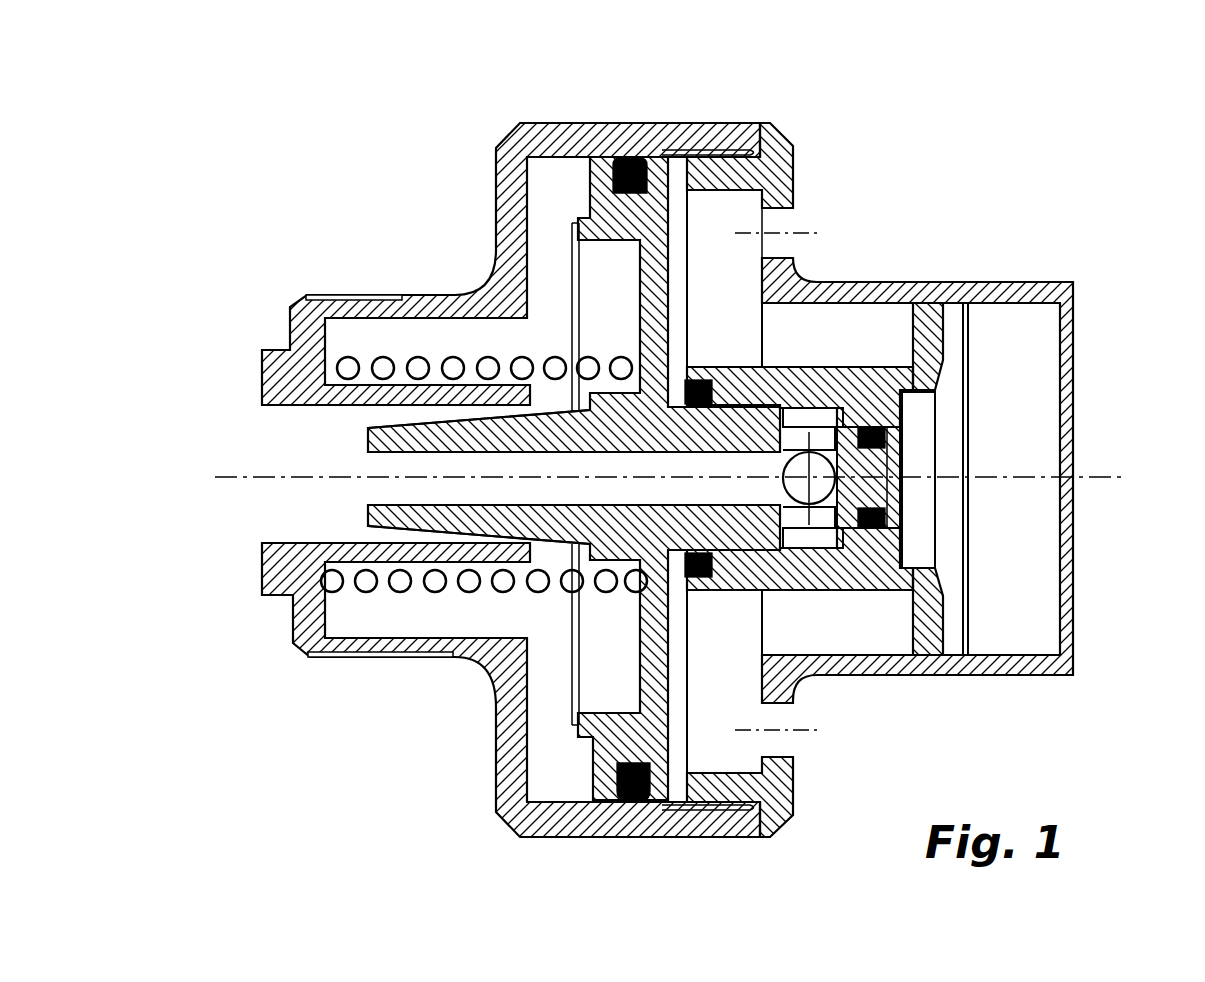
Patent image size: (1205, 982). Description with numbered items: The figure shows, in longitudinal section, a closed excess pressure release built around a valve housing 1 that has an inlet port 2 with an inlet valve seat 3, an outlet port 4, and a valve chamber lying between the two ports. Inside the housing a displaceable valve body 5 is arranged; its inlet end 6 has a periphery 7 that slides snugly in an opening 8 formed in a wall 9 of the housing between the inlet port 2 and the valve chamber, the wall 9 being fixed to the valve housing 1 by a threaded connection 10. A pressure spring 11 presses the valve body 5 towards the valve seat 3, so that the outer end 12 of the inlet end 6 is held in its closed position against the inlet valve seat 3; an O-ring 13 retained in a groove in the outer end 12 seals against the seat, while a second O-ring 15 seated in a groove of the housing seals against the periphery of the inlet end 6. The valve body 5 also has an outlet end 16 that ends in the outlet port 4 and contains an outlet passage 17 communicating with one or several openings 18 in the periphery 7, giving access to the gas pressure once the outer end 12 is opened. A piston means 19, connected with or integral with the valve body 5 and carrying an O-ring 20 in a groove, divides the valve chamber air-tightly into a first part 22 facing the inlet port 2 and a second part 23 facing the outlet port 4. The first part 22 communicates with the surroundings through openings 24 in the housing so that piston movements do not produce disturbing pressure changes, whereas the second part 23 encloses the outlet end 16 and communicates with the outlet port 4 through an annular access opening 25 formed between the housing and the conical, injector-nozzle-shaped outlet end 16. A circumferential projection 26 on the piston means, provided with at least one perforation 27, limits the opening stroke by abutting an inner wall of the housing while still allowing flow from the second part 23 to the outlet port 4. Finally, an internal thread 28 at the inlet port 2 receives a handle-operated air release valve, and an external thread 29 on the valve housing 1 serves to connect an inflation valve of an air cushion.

The valve housing 1 is at (467, 293).
The inlet port 2 is at (1040, 330).
The inlet valve seat 3 is at (900, 433).
The outlet port 4 is at (275, 408).
The valve body 5 is at (592, 563).
The inlet end 6 is at (800, 367).
The periphery 7 is at (707, 452).
The opening 8 is at (763, 590).
The wall 9 is at (800, 170).
The threaded connection 10 is at (742, 123).
The pressure spring 11 is at (403, 360).
The outer end 12 is at (850, 478).
The O-ring 13 is at (885, 522).
The second O-ring 15 is at (703, 375).
The outlet end 16 is at (368, 513).
The outlet passage 17 is at (368, 440).
The openings 18 is at (845, 560).
The piston means 19 is at (597, 160).
The O-ring 20 is at (634, 160).
The first part of the valve chamber 22 is at (675, 228).
The second part of the valve chamber 23 is at (550, 187).
The openings 24 is at (800, 217).
The annular access opening 25 is at (413, 655).
The circumferential projection 26 is at (570, 725).
The perforation 27 is at (573, 227).
The internal thread 28 is at (1040, 648).
The external thread 29 is at (328, 293).